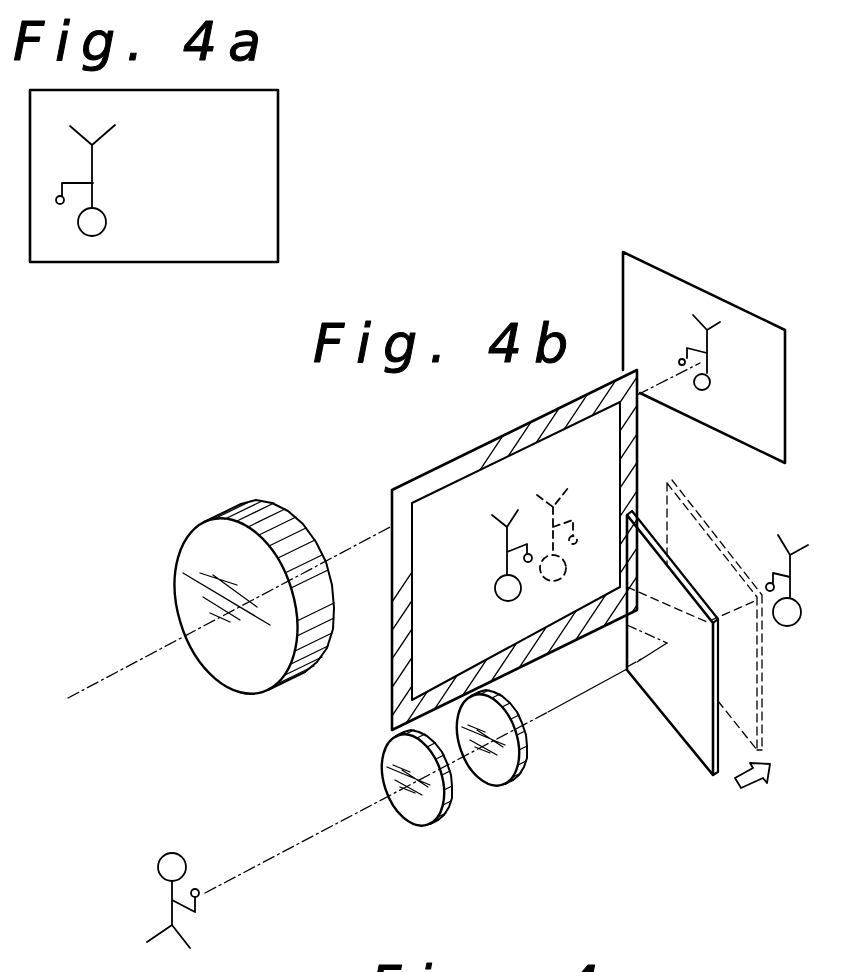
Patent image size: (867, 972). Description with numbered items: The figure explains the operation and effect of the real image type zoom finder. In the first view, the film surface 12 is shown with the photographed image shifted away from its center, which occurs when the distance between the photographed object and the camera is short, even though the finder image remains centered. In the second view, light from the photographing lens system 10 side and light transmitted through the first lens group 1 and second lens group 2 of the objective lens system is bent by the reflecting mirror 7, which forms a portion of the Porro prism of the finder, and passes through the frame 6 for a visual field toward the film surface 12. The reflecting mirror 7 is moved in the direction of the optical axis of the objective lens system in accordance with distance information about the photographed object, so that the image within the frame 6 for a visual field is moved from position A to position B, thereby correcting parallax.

In FIG. 4b, the first lens group 1 is at (427, 812).
In FIG. 4b, the second lens group 2 is at (502, 775).
In FIG. 4b, the frame for a visual field 6 is at (456, 462).
In FIG. 4b, the reflecting mirror 7 is at (683, 723).
In FIG. 4b, the photographing lens system 10 is at (282, 523).
In FIG. 4a, the film surface 12 is at (278, 178).
In FIG. 4b, the film surface 12 is at (785, 393).
In FIG. 4b, the position A is at (475, 533).
In FIG. 4b, the position B is at (584, 472).